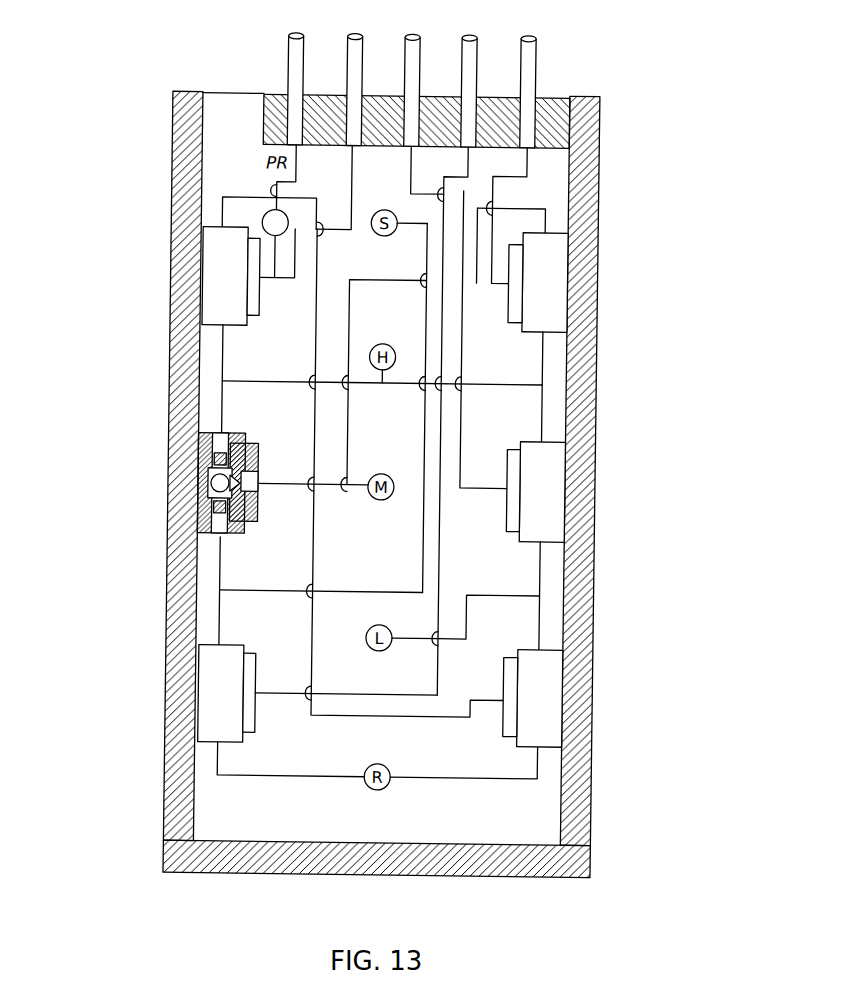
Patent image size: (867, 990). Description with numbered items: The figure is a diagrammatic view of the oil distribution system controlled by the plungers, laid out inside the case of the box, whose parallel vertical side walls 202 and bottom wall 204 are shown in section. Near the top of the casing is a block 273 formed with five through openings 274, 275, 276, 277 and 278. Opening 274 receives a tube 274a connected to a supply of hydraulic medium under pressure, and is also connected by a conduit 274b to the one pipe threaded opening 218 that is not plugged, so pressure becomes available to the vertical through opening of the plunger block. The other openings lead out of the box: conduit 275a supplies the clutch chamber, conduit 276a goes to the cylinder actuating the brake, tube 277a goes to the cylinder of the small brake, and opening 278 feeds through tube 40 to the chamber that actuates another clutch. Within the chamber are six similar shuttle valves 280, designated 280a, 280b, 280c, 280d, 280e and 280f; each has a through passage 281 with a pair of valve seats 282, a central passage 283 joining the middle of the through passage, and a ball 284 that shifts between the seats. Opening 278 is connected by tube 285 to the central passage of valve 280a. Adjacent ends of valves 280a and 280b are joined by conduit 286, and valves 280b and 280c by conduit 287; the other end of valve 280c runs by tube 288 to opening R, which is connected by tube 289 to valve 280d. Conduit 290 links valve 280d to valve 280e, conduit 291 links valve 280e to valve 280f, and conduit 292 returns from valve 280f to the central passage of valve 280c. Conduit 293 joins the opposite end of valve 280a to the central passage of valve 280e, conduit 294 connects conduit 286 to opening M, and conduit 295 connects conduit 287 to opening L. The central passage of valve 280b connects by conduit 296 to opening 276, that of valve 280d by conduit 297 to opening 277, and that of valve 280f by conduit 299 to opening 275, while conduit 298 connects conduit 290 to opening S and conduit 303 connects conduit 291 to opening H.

The tube 40 is at (532, 42).
The side wall 202 is at (182, 298).
The bottom wall 204 is at (402, 866).
The pipe threaded opening 218 is at (260, 215).
The block 273 is at (313, 112).
The through opening 274 is at (258, 105).
The tube 274a is at (285, 58).
The conduit 274b is at (262, 186).
The through opening 275 is at (358, 112).
The conduit 275a is at (351, 37).
The through opening 276 is at (425, 110).
The conduit 276a is at (416, 38).
The through opening 277 is at (485, 110).
The tube 277a is at (475, 38).
The through opening 278 is at (532, 112).
The shuttle valve 280 is at (212, 490).
The shuttle valve 280a is at (544, 276).
The shuttle valve 280b is at (546, 490).
The shuttle valve 280c is at (543, 692).
The shuttle valve 280d is at (208, 690).
The shuttle valve 280e is at (210, 542).
The shuttle valve 280f is at (215, 260).
The through passage 281 is at (214, 472).
The valve seat 282 is at (205, 458).
The central passage 283 is at (246, 484).
The ball 284 is at (232, 486).
The tube 285 is at (524, 167).
The conduit 286 is at (544, 358).
The conduit 287 is at (548, 566).
The tube 288 is at (490, 780).
The tube 289 is at (308, 780).
The conduit 290 is at (222, 632).
The conduit 291 is at (222, 358).
The conduit 292 is at (318, 548).
The conduit 293 is at (544, 224).
The conduit 294 is at (472, 384).
The conduit 295 is at (508, 597).
The conduit 296 is at (482, 490).
The conduit 297 is at (288, 697).
The conduit 298 is at (355, 587).
The conduit 299 is at (270, 282).
The conduit 303 is at (240, 388).